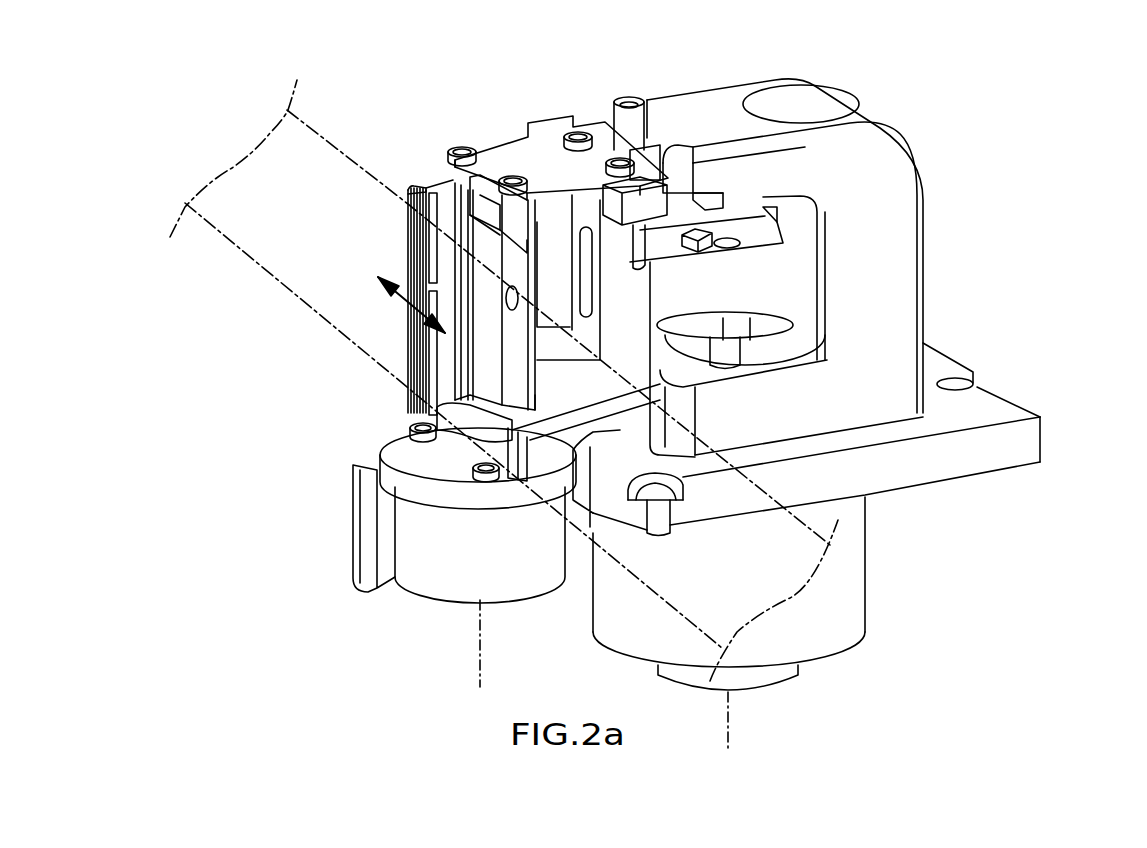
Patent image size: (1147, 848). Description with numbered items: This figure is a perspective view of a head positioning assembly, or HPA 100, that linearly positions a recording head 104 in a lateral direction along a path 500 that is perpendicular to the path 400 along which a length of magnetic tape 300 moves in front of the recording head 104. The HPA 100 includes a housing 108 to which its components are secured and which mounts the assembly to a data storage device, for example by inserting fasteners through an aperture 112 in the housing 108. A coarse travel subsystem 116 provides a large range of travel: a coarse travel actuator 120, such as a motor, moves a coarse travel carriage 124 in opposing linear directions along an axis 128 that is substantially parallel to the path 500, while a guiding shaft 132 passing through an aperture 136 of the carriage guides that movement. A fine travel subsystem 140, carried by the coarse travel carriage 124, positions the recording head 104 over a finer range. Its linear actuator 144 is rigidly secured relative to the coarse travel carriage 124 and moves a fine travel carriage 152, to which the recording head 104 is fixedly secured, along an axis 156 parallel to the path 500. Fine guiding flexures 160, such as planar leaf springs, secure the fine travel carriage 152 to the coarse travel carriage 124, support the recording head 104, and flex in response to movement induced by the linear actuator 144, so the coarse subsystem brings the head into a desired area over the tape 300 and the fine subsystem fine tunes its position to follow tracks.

The head positioning assembly 100 is at (985, 123).
The recording head 104 is at (408, 195).
The housing 108 is at (1040, 414).
The aperture 112 is at (658, 512).
The coarse travel subsystem 116 is at (927, 622).
The coarse travel actuator 120 is at (852, 572).
The coarse travel carriage 124 is at (783, 282).
The axis 128 is at (728, 725).
The guiding shaft 132 is at (633, 100).
The aperture 136 is at (643, 260).
The fine travel subsystem 140 is at (352, 441).
The linear actuator 144 is at (427, 592).
The fine travel carriage 152 is at (483, 318).
The axis 156 is at (480, 663).
The fine guiding flexure 160 is at (513, 157).
The magnetic tape 300 is at (233, 218).
The path 400 is at (410, 299).
The path 500 is at (410, 283).